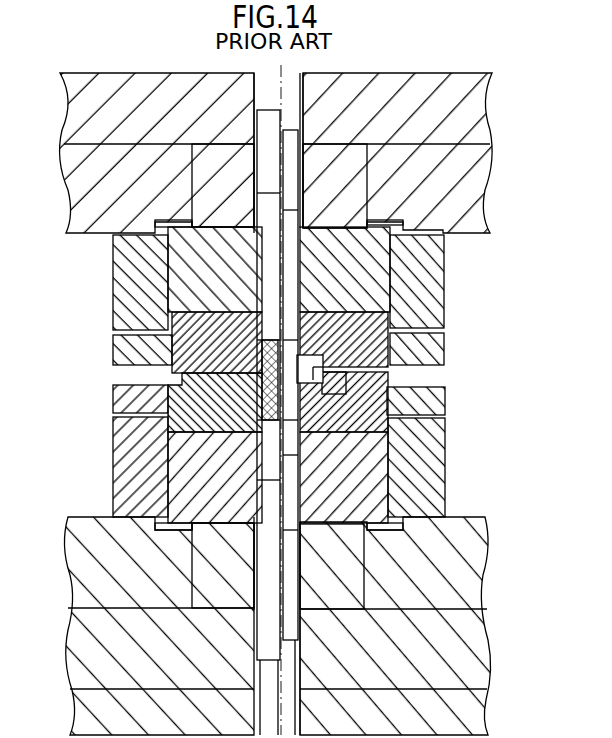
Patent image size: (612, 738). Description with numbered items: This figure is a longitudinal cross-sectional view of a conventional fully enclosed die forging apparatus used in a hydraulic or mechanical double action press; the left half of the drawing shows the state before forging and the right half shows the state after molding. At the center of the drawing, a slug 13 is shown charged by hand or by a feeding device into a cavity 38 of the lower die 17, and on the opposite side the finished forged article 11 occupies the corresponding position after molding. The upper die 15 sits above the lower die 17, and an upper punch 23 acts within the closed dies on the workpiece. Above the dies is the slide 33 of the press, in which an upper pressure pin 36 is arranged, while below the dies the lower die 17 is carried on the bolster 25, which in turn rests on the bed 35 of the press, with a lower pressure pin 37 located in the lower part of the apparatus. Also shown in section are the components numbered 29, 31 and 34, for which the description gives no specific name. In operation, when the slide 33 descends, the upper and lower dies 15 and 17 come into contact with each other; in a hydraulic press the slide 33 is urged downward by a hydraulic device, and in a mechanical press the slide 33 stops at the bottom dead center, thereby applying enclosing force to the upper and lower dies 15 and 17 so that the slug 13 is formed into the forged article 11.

The forged article 11 is at (312, 360).
The slug 13 is at (262, 403).
The upper die 15 is at (173, 323).
The lower die 17 is at (177, 422).
The upper punch 23 is at (284, 306).
The bolster 25 is at (293, 458).
The lower clamp member 29 is at (295, 383).
The washer 31 is at (327, 391).
The slide 33 is at (487, 121).
The lower frame block 34 is at (475, 666).
The bed 35 is at (480, 712).
The upper pressure pin 36 is at (290, 172).
The lower pressure pin 37 is at (291, 577).
The cavity 38 is at (258, 380).